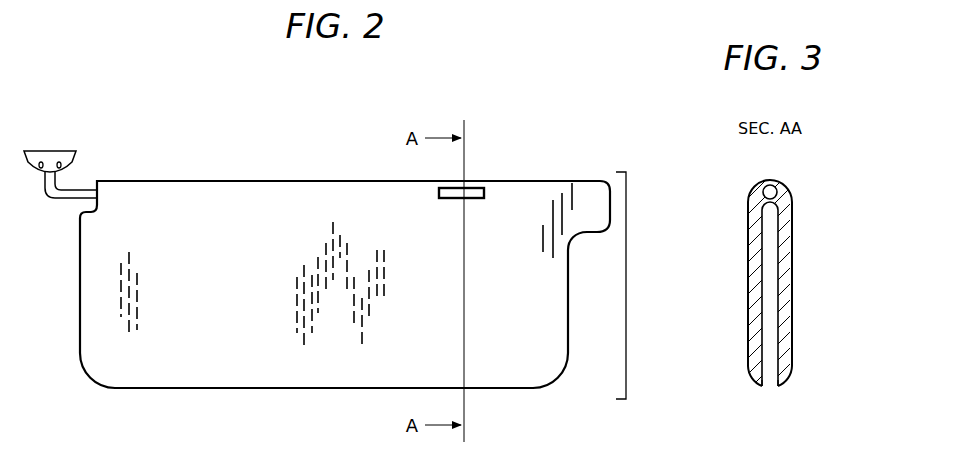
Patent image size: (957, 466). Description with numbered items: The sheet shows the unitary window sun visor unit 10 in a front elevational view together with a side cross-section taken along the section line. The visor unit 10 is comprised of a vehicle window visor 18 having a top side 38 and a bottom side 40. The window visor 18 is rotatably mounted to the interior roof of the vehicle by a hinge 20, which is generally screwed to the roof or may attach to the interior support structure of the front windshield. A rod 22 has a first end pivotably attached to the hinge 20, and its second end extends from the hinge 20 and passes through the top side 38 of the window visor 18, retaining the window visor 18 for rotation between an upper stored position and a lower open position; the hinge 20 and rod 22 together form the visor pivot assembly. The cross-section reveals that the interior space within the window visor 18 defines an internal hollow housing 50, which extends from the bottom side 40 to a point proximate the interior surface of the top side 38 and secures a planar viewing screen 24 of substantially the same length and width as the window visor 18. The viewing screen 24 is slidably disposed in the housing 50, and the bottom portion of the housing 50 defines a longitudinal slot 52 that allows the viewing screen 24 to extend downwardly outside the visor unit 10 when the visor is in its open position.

In FIG. 2, the unitary window sun visor unit 10 is at (630, 290).
In FIG. 2, the window visor 18 is at (263, 205).
In FIG. 3, the window visor 18 is at (792, 223).
In FIG. 2, the hinge 20 is at (52, 158).
In FIG. 2, the rod 22 is at (85, 187).
In FIG. 3, the viewing screen 24 is at (765, 333).
In FIG. 2, the top side 38 is at (543, 180).
In FIG. 2, the bottom side 40 is at (180, 392).
In FIG. 3, the internal hollow housing 50 is at (779, 318).
In FIG. 3, the longitudinal slot 52 is at (768, 372).